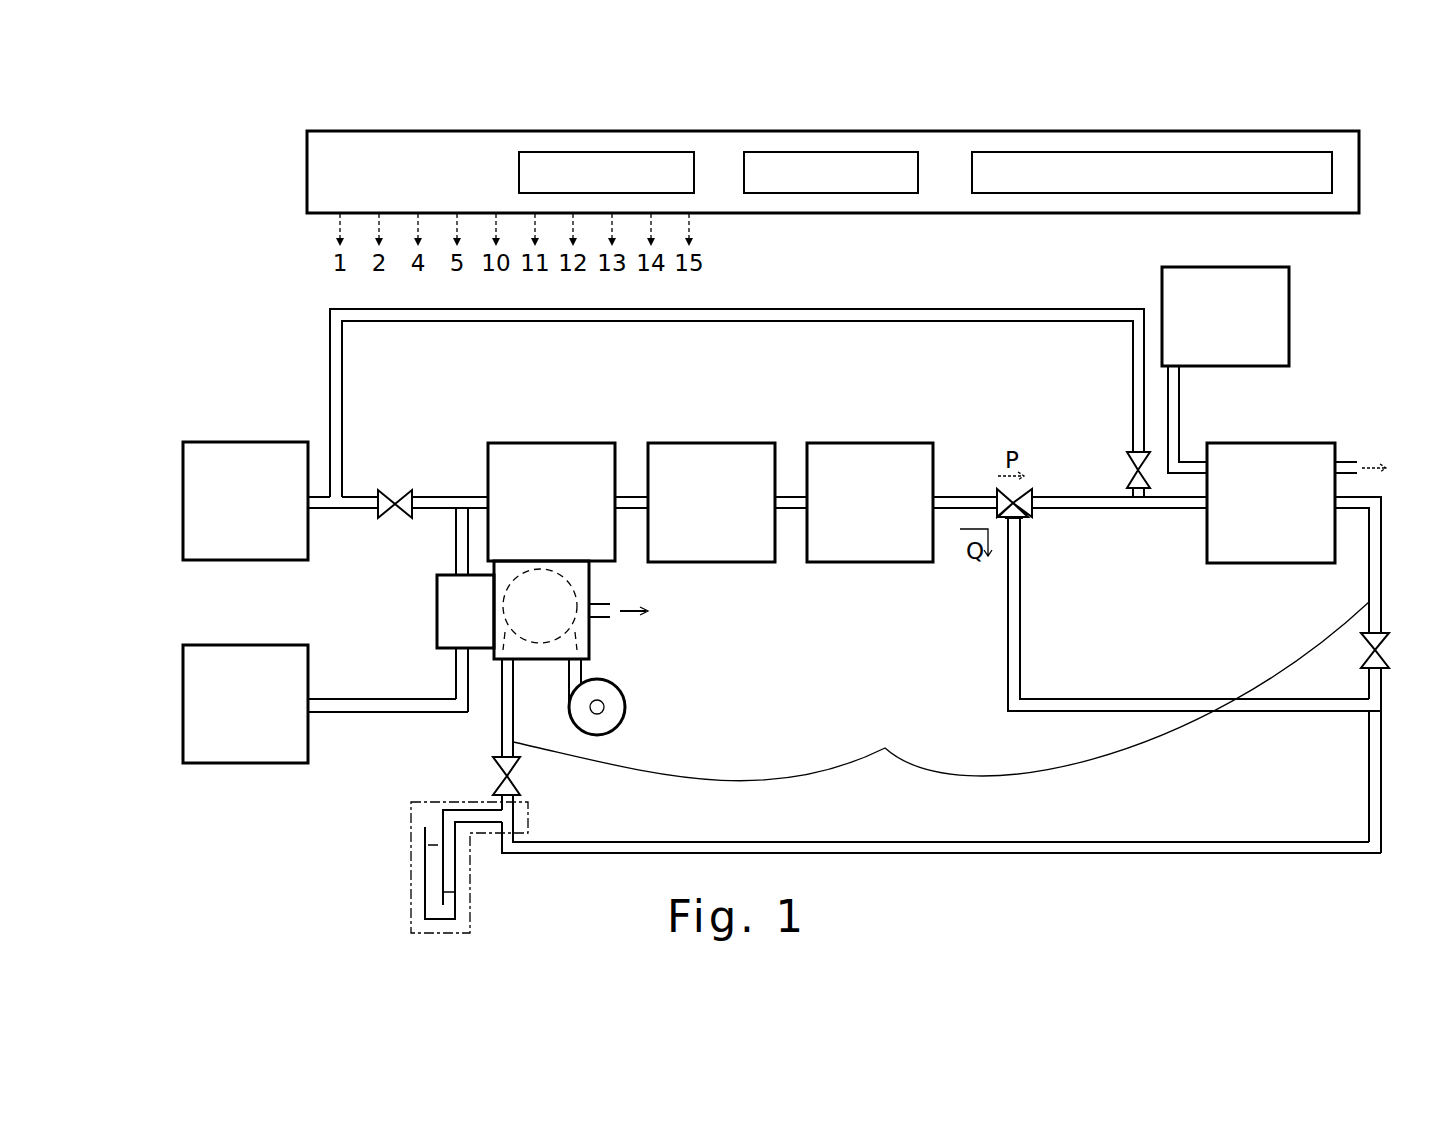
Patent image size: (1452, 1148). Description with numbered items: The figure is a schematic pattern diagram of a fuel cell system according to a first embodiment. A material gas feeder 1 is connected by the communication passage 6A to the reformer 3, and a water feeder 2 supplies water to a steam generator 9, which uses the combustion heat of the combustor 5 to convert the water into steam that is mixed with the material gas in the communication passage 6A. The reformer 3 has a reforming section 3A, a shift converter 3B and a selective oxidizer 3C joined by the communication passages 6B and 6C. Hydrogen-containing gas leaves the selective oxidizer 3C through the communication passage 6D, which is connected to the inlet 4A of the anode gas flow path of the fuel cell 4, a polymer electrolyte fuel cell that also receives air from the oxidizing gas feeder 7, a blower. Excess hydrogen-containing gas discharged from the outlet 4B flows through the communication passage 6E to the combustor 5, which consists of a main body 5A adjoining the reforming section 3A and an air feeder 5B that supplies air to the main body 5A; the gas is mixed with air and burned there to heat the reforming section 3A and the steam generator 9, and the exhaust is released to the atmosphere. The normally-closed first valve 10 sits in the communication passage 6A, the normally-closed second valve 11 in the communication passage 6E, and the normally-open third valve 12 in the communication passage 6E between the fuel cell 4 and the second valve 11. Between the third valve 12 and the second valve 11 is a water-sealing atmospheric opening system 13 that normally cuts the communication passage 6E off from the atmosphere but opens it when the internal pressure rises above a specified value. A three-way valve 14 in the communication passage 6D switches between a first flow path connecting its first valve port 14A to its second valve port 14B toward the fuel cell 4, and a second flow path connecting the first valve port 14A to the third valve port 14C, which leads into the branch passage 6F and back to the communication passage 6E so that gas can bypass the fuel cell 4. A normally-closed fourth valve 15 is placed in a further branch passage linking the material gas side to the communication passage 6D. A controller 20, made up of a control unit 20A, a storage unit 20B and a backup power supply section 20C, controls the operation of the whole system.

The material gas feeder 1 is at (246, 442).
The water feeder 2 is at (246, 645).
The reformer 3 is at (535, 385).
The reforming section 3A is at (553, 443).
The shift converter 3B is at (712, 443).
The selective oxidizer 3C is at (872, 443).
The fuel cell 4 is at (1270, 443).
The inlet 4A is at (1193, 492).
The outlet 4B is at (1346, 493).
The combustor 5 is at (688, 640).
The main body 5A is at (600, 612).
The air feeder 5B is at (622, 697).
The communication passage 6A is at (456, 497).
The communication passage 6B is at (631, 497).
The communication passage 6C is at (790, 497).
The communication passage 6D is at (1078, 497).
The communication passage 6E is at (885, 842).
The branch passage 6F is at (1226, 711).
The oxidizing gas feeder 7 is at (1292, 302).
The steam generator 9 is at (437, 632).
The first valve 10 is at (398, 488).
The second valve 11 is at (493, 776).
The third valve 12 is at (1392, 651).
The atmospheric opening system 13 is at (411, 812).
The three-way valve 14 is at (1025, 515).
The first valve port 14A is at (999, 520).
The second valve port 14B is at (1035, 506).
The third valve port 14C is at (1020, 519).
The fourth valve 15 is at (1130, 475).
The controller 20 is at (395, 131).
The control unit 20A is at (589, 152).
The storage unit 20B is at (824, 152).
The backup power supply section 20C is at (1066, 152).